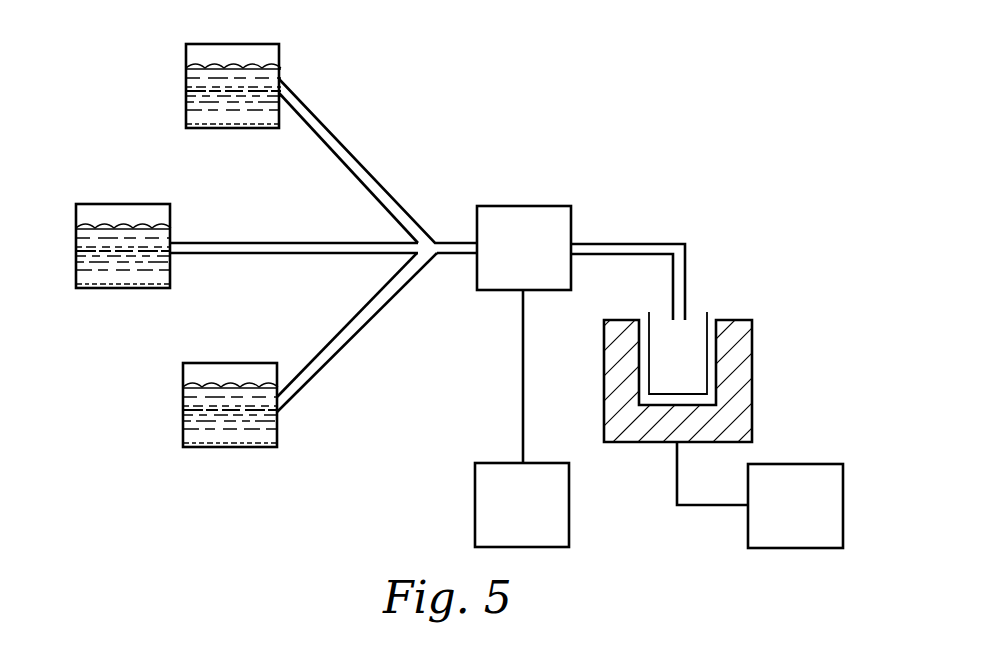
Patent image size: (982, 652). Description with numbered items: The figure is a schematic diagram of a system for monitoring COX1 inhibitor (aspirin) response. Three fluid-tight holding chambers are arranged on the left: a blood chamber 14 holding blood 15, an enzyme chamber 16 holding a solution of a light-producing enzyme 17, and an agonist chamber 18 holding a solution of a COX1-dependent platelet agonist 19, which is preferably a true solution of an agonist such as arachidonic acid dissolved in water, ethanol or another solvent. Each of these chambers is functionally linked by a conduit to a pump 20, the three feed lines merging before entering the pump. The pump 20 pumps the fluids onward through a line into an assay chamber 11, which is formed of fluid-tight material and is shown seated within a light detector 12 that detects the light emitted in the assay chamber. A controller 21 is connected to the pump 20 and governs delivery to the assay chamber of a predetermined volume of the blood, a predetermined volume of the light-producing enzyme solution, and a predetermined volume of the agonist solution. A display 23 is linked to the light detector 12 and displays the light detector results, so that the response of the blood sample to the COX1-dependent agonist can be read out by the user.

The assay chamber 11 is at (710, 316).
The light detector 12 is at (752, 371).
The blood chamber 14 is at (186, 48).
The blood 15 is at (232, 73).
The enzyme chamber 16 is at (76, 208).
The light-producing enzyme 17 is at (120, 232).
The agonist chamber 18 is at (184, 367).
The COX1-dependent platelet agonist 19 is at (226, 392).
The pump 20 is at (528, 207).
The controller 21 is at (495, 463).
The display 23 is at (809, 464).